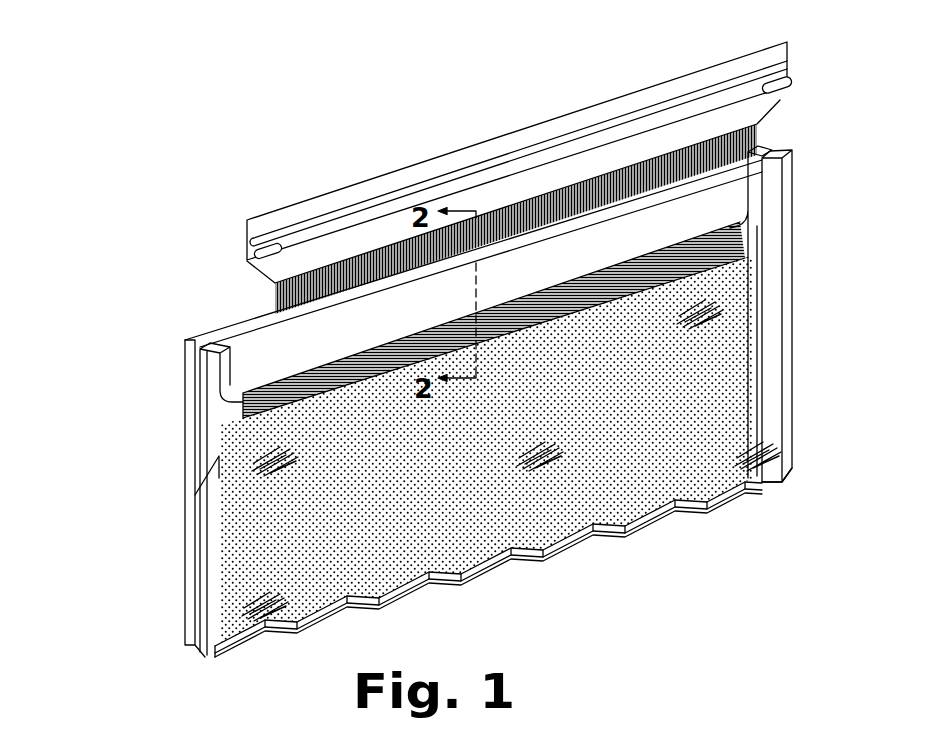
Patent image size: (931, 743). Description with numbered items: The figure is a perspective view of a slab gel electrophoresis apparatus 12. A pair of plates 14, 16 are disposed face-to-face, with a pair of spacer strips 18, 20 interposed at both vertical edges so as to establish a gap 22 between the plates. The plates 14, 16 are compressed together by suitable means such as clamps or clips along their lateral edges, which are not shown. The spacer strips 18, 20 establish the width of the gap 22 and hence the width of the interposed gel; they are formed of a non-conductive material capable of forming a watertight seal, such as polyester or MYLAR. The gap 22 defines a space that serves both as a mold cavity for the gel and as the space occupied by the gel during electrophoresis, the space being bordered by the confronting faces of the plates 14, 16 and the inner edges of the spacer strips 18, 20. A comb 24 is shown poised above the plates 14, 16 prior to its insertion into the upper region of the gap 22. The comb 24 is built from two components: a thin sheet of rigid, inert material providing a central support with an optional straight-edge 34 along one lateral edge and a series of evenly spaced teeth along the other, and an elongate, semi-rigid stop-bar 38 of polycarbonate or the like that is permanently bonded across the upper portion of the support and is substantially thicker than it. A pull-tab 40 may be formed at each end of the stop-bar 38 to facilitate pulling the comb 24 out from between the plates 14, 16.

The slab gel electrophoresis apparatus 12 is at (120, 223).
The plate 14 is at (187, 639).
The plate 16 is at (401, 573).
The spacer strip 18 is at (193, 495).
The spacer strip 20 is at (786, 321).
The gap 22 is at (232, 433).
The comb 24 is at (801, 65).
The straight-edge 34 is at (527, 131).
The stop-bar 38 is at (400, 196).
The pull-tab 40 is at (245, 252).